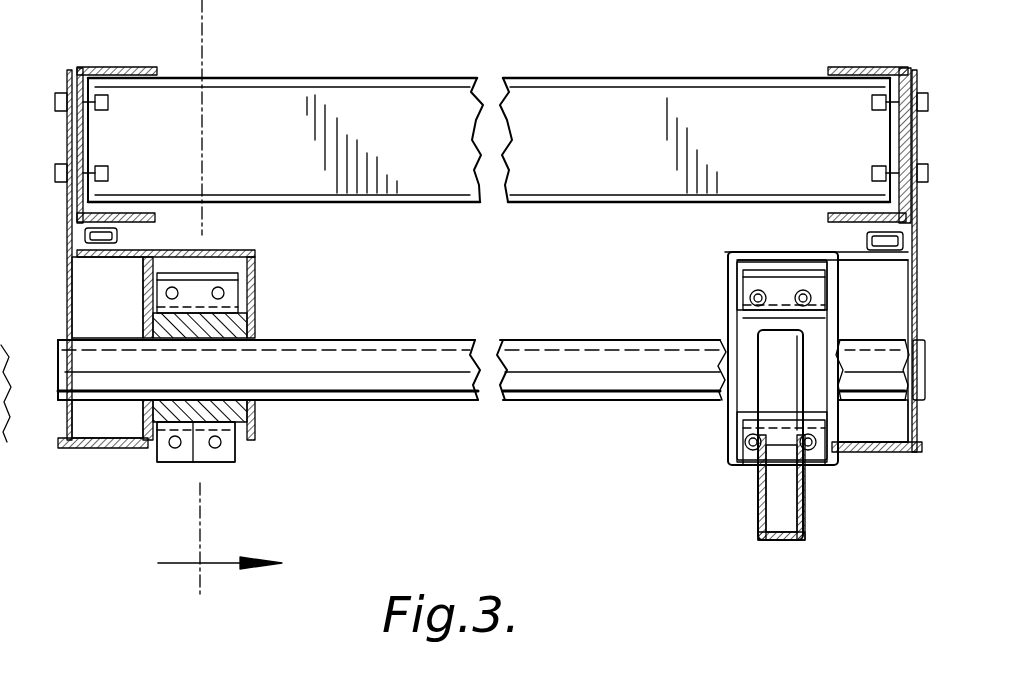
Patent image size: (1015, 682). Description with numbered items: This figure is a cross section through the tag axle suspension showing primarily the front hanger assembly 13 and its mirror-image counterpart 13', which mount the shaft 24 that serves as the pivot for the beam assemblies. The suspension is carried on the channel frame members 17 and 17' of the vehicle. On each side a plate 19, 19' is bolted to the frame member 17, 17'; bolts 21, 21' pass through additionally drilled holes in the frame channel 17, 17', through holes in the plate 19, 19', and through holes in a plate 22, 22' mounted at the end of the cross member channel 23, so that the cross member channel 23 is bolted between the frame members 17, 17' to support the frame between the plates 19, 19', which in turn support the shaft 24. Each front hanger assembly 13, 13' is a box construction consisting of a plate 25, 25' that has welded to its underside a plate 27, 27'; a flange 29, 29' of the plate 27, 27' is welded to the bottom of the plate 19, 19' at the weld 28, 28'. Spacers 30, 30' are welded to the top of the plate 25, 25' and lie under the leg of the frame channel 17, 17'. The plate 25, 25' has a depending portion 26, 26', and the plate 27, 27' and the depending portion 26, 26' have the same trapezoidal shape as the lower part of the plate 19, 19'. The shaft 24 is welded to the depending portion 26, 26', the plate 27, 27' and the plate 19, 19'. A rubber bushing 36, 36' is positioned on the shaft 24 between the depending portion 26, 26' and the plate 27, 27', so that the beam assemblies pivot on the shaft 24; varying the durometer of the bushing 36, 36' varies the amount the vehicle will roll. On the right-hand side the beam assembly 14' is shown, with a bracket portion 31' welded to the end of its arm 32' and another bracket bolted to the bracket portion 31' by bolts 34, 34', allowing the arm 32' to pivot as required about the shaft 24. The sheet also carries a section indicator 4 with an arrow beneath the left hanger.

The section line 4- 4 is at (217, 310).
The front hanger assembly 13 is at (230, 322).
The front hanger assembly 13' is at (759, 337).
The beam assembly 14' is at (748, 435).
The channel frame member 17 is at (117, 37).
The channel frame member 17' is at (868, 39).
The plate 19 is at (46, 255).
The plate 19' is at (950, 261).
The bolts 21 is at (119, 140).
The bolts 21' is at (934, 116).
The plate 22 is at (122, 145).
The plate 22' is at (862, 145).
The cross member channel 23 is at (525, 80).
The shaft 24 is at (540, 340).
The plate 25 is at (166, 231).
The plate 25' is at (816, 235).
The depending portion 26 is at (249, 353).
The depending portion 26' is at (742, 286).
The plate 27 is at (107, 297).
The plate 27' is at (908, 351).
The weld 28 is at (80, 474).
The weld 28' is at (916, 396).
The flange 29 is at (107, 466).
The flange 29' is at (895, 460).
The spacers 30 is at (66, 233).
The spacers 30' is at (920, 233).
The bracket portion 31' is at (736, 321).
The arm 32' is at (827, 504).
The bolts 34 is at (201, 374).
The bolts 34' is at (775, 368).
The rubber bushing 36 is at (188, 474).
The rubber bushing 36' is at (736, 437).